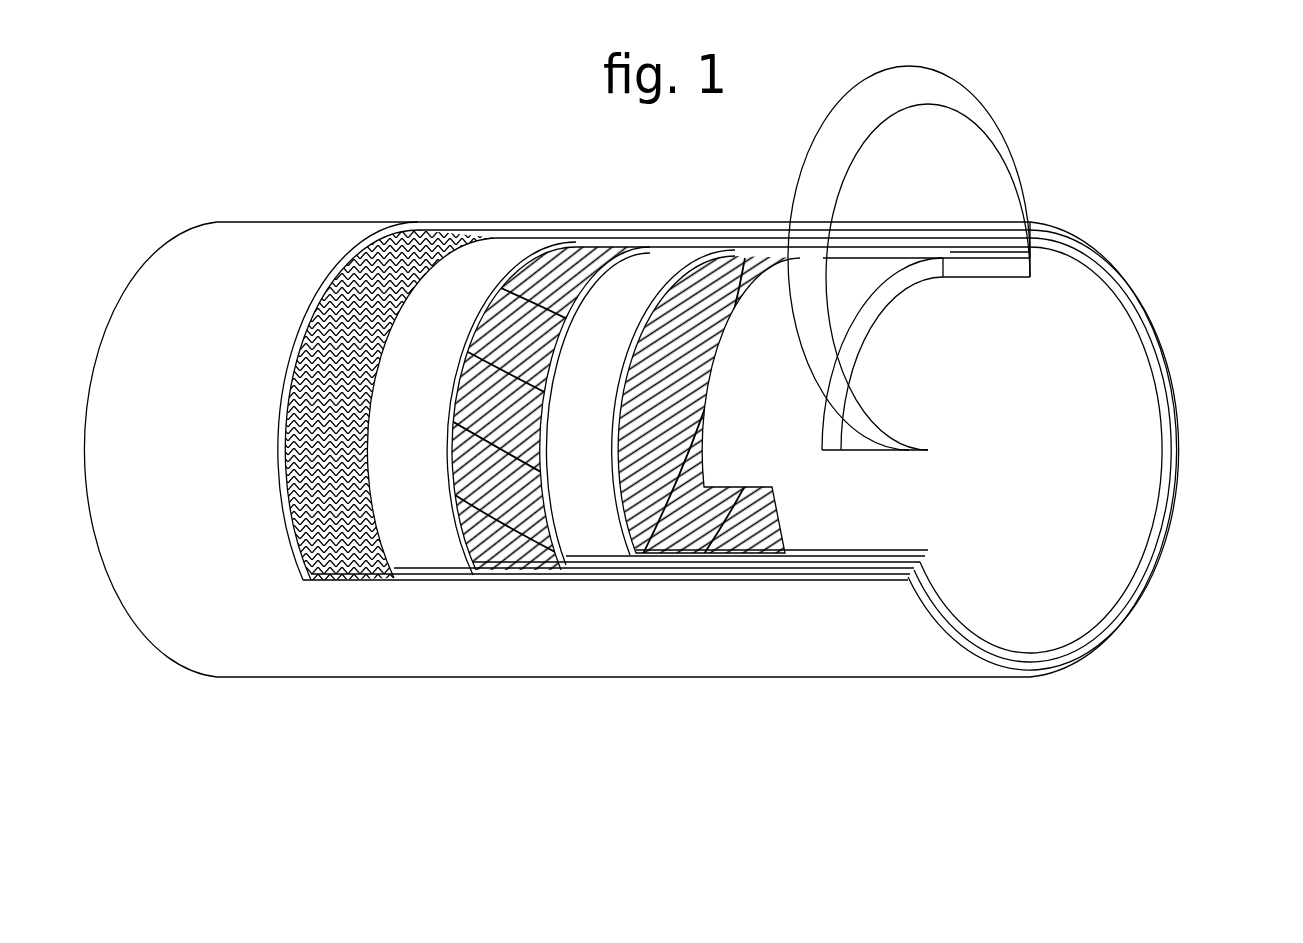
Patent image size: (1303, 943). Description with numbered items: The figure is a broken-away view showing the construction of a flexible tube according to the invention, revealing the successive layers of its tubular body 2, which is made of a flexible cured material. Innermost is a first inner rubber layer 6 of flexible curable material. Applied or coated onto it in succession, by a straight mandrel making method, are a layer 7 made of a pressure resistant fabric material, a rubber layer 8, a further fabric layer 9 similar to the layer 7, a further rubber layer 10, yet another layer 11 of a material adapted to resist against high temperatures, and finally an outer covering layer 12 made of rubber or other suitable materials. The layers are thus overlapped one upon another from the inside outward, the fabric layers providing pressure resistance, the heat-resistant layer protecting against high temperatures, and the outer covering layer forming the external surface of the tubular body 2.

The tubular body 2 is at (1093, 237).
The first inner rubber layer 6 is at (860, 507).
The pressure resistant fabric layer 7 is at (672, 507).
The rubber layer 8 is at (593, 507).
The further fabric layer 9 is at (497, 507).
The further rubber layer 10 is at (407, 507).
The high temperature resistant layer 11 is at (320, 507).
The outer covering layer 12 is at (221, 507).